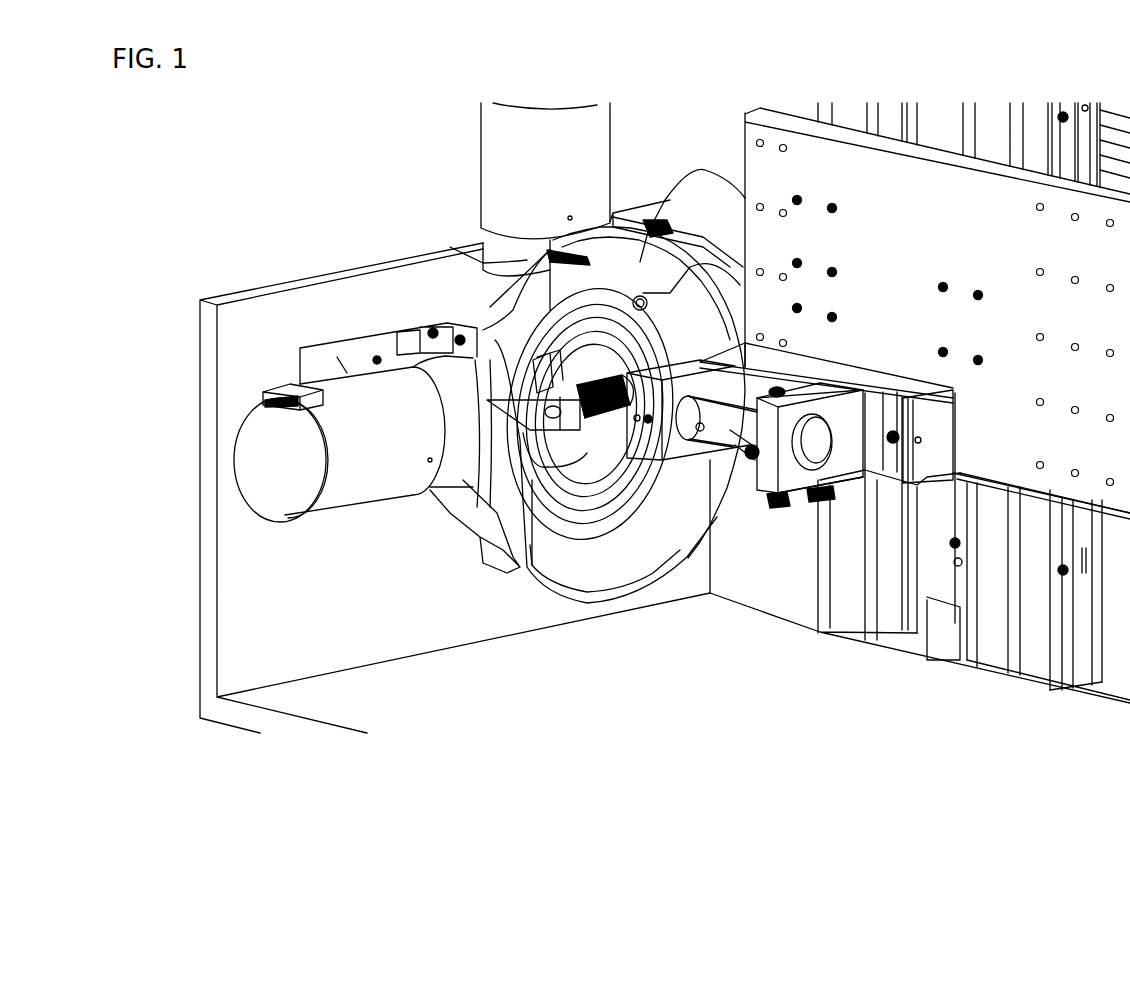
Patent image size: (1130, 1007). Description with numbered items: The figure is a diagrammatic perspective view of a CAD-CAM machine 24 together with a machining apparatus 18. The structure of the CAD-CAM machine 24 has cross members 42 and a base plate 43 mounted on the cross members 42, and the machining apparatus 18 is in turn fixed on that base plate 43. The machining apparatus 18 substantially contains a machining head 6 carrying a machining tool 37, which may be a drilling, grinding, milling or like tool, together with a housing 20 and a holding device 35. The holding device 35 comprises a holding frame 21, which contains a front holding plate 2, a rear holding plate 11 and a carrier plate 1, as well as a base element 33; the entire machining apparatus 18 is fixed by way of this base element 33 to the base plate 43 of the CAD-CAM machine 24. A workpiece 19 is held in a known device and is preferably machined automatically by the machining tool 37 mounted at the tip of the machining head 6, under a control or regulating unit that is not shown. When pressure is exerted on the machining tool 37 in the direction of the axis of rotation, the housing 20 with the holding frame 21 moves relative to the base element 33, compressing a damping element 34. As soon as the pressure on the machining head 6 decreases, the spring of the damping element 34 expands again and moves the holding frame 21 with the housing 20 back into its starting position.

The carrier plate 1 is at (877, 450).
The front holding plate 2 is at (710, 443).
The machining head 6 is at (591, 425).
The rear holding plate 11 is at (800, 480).
The machining apparatus 18 is at (830, 808).
The workpiece 19 is at (537, 380).
The housing 20 is at (688, 445).
The holding frame 21 is at (843, 685).
The CAD-CAM machine 24 is at (390, 158).
The base element 33 is at (943, 460).
The damping element 34 is at (894, 430).
The holding device 35 is at (873, 760).
The machining tool 37 is at (560, 390).
The cross members 42 is at (1000, 657).
The base plate 43 is at (1020, 420).